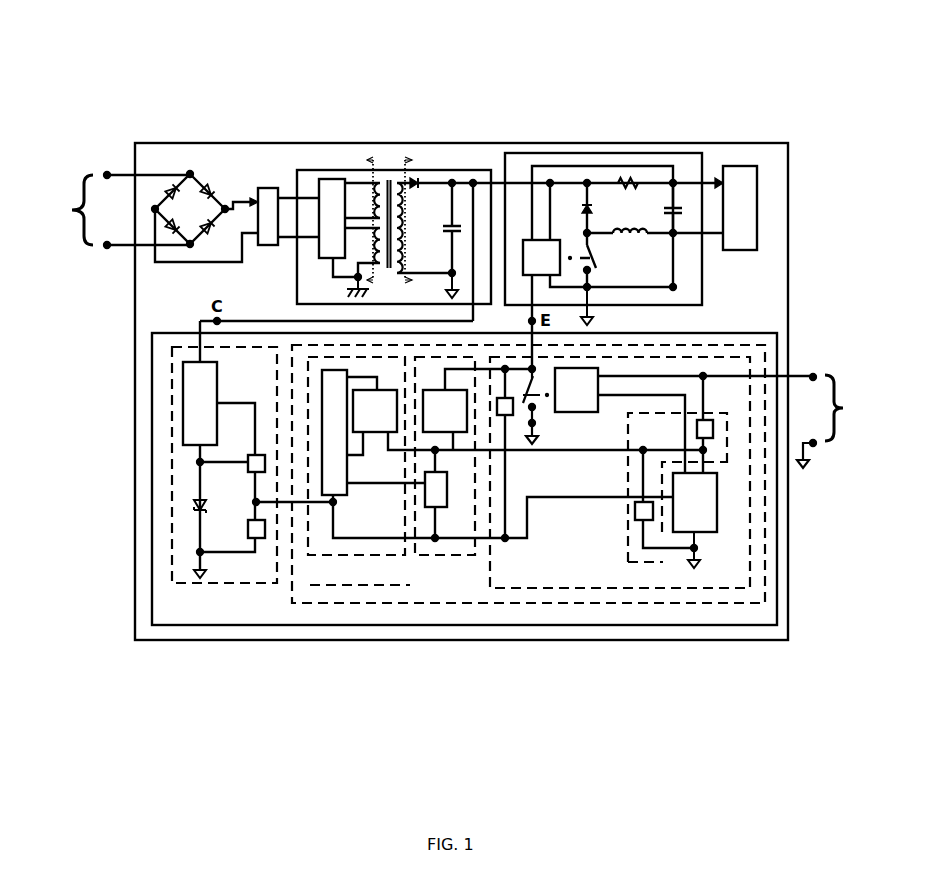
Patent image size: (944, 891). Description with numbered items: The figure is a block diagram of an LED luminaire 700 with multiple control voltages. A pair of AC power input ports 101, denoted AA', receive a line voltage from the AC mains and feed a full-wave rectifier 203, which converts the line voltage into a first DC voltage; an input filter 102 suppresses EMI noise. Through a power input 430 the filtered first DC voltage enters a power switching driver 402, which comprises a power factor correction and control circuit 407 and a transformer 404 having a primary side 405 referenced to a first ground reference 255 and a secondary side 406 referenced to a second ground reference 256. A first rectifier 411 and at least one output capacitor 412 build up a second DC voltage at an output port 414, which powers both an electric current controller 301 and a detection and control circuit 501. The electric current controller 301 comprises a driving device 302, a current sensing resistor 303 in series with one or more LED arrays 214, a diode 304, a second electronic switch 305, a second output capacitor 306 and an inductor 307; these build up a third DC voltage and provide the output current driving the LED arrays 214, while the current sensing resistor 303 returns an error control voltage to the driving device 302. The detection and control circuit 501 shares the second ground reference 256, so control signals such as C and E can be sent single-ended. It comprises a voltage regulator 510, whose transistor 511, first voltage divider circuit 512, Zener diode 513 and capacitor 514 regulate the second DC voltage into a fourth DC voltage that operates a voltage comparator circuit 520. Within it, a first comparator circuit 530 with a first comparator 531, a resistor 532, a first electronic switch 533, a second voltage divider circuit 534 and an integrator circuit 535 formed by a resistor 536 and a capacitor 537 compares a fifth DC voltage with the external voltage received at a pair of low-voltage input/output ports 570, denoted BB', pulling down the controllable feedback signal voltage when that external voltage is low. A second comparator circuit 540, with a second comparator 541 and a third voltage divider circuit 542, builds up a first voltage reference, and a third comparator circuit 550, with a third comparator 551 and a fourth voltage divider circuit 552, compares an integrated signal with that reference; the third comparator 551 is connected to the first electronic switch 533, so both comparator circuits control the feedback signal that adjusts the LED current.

The AC power input ports 101 is at (80, 183).
The full-wave rectifier 203 is at (185, 172).
The input filter 102 is at (268, 187).
The power input 430 is at (289, 195).
The power switching driver 402 is at (305, 165).
The power factor correction and control circuit 407 is at (330, 180).
The first ground reference 255 is at (347, 297).
The transformer 404 is at (385, 187).
The primary side 405 is at (366, 155).
The secondary side 406 is at (413, 153).
The first rectifier 411 is at (417, 183).
The output capacitor 412 is at (447, 223).
The output port 414 is at (473, 183).
The second ground reference 256 is at (450, 290).
The LED luminaire 700 is at (527, 141).
The electric current controller 301 is at (562, 151).
The driving device 302 is at (558, 240).
The current sensing resistor 303 is at (633, 182).
The inductor 307 is at (642, 228).
The diode 304 is at (590, 210).
The second electronic switch 305 is at (597, 253).
The second output capacitor 306 is at (678, 217).
The LED arrays 214 is at (735, 166).
The detection and control circuit 501 is at (150, 366).
The voltage regulator 510 is at (170, 398).
The first voltage divider circuit 512 is at (183, 432).
The transistor 511 is at (248, 463).
The Zener diode 513 is at (198, 503).
The capacitor 514 is at (248, 538).
The voltage comparator circuit 520 is at (583, 606).
The second comparator circuit 540 is at (370, 558).
The third voltage divider circuit 542 is at (322, 370).
The second comparator 541 is at (373, 433).
The third comparator circuit 550 is at (440, 558).
The third comparator 551 is at (462, 433).
The fourth voltage divider circuit 552 is at (443, 507).
The first comparator circuit 530 is at (663, 591).
The integrator circuit 535 is at (730, 408).
The first comparator 531 is at (575, 412).
The resistor 532 is at (510, 417).
The first electronic switch 533 is at (540, 402).
The second voltage divider circuit 534 is at (717, 518).
The resistor 536 is at (713, 430).
The capacitor 537 is at (638, 520).
The low-voltage input/output ports 570 is at (838, 390).